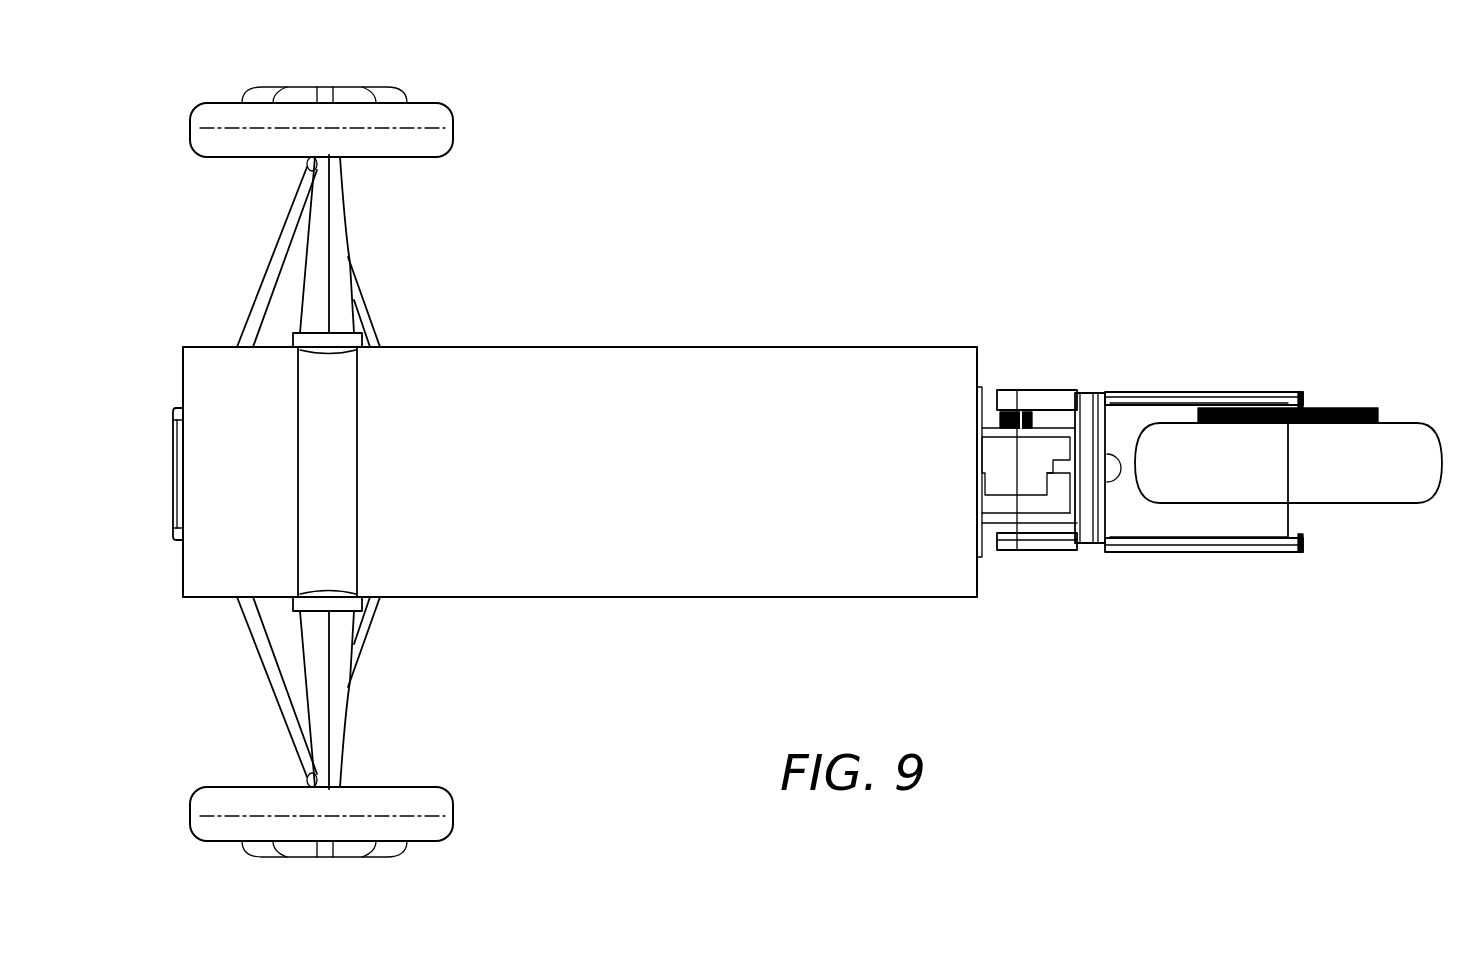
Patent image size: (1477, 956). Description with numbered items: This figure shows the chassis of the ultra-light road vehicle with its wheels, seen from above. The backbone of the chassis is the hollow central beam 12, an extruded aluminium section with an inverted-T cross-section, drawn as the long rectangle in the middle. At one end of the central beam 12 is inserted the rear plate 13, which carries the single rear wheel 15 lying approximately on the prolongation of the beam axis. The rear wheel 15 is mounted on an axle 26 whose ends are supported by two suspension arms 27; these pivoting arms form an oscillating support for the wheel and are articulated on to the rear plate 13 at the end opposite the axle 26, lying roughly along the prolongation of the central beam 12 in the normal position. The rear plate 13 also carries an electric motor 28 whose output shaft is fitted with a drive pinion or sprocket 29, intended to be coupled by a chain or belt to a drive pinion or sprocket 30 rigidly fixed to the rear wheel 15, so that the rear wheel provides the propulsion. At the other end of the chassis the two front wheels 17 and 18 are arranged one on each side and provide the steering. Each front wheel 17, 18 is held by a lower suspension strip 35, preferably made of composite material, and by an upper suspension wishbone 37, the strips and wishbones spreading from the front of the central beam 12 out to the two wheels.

The hollow central beam 12 is at (905, 372).
The rear plate 13 is at (987, 523).
The rear wheel 15 is at (1410, 488).
The front wheel 17 is at (435, 805).
The front wheel 18 is at (432, 118).
The axle 26 is at (1288, 513).
The suspension arm 27 is at (1193, 397).
The electric motor 28 is at (1053, 447).
The drive pinion or sprocket 29 is at (1025, 412).
The drive pinion or sprocket 30 is at (1328, 407).
The lower suspension strip 35 is at (340, 267).
The upper suspension wishbone 37 is at (270, 273).